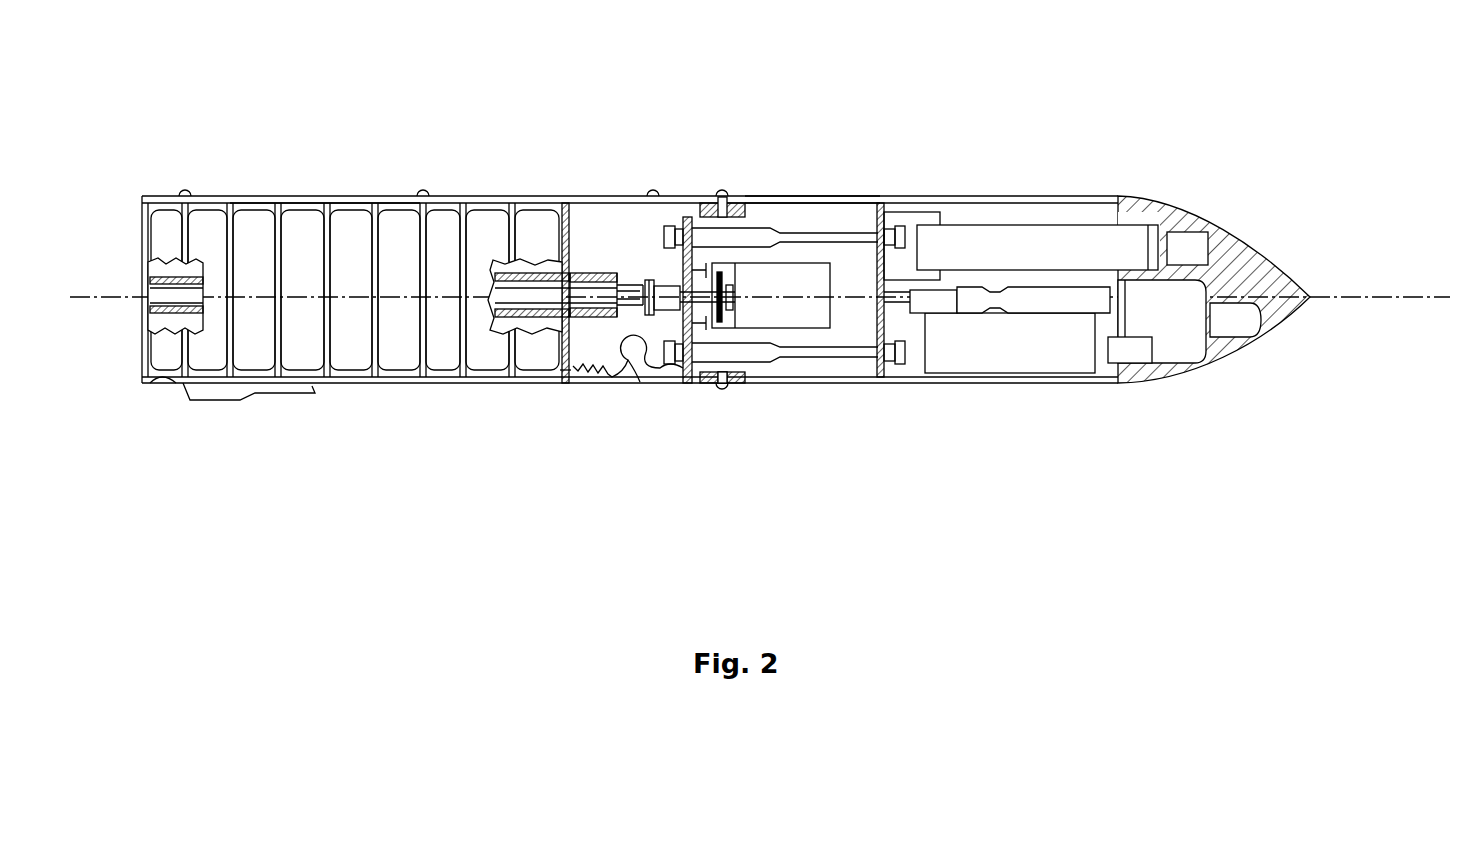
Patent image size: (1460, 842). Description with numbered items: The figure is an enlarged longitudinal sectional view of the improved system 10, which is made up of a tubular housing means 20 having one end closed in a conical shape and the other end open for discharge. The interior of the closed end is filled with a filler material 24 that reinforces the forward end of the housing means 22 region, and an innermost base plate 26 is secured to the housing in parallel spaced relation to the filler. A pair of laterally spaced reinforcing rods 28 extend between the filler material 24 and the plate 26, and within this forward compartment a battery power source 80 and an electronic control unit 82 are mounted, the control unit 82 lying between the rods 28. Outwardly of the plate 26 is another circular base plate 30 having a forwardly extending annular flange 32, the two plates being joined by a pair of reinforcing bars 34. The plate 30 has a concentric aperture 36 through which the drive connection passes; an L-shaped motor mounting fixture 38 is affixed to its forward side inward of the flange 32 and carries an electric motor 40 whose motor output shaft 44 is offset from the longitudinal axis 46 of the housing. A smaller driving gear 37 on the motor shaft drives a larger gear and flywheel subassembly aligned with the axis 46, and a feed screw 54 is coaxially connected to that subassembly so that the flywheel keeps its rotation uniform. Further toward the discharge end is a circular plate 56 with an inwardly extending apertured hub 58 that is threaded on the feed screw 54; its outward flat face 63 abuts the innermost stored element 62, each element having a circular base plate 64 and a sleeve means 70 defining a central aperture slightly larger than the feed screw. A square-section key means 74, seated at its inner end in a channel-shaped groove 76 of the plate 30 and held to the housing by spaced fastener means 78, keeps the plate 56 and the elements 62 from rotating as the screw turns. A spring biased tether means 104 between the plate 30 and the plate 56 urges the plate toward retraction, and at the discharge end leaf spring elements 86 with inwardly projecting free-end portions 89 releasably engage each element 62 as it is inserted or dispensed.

The improved system 10 is at (378, 190).
The tubular housing means 20 is at (758, 197).
The nose shell 22 is at (1291, 322).
The filler material 24 is at (1263, 256).
The base plate 26 is at (907, 387).
The reinforcing rods 28 is at (975, 290).
The base plate 30 is at (800, 402).
The annular flange 32 is at (702, 387).
The reinforcing bars 34 is at (848, 228).
The concentric aperture 36 is at (685, 290).
The driving gear 37 is at (722, 327).
The motor mounting fixture 38 is at (733, 330).
The electric motor 40 is at (785, 292).
The motor output shaft 44 is at (727, 262).
The longitudinal axis 46 is at (1392, 294).
The feed screw 54 is at (632, 282).
The circular plate 56 is at (566, 215).
The apertured hub 58 is at (609, 270).
The stored element 62 is at (165, 228).
The flat face 63 is at (558, 376).
The base plate 64 is at (510, 380).
The sleeve means 70 is at (150, 280).
The key means 74 is at (313, 207).
The channel-shaped groove 76 is at (704, 200).
The fastener means 78 is at (421, 203).
The battery power source 80 is at (1085, 232).
The electronic control unit 82 is at (987, 358).
The leaf spring elements 86 is at (228, 402).
The free-end portion 89 is at (160, 388).
The spring biased tether means 104 is at (636, 382).